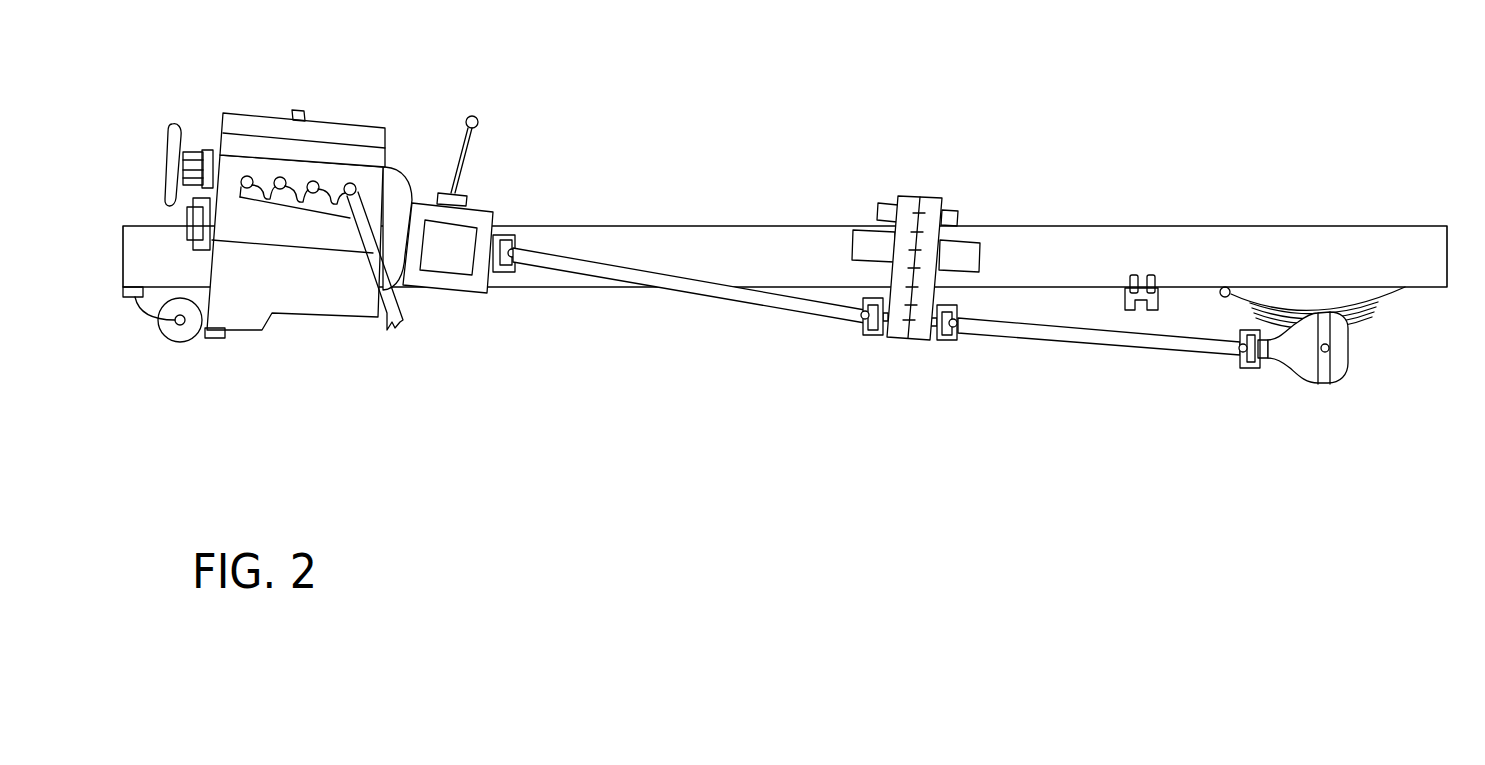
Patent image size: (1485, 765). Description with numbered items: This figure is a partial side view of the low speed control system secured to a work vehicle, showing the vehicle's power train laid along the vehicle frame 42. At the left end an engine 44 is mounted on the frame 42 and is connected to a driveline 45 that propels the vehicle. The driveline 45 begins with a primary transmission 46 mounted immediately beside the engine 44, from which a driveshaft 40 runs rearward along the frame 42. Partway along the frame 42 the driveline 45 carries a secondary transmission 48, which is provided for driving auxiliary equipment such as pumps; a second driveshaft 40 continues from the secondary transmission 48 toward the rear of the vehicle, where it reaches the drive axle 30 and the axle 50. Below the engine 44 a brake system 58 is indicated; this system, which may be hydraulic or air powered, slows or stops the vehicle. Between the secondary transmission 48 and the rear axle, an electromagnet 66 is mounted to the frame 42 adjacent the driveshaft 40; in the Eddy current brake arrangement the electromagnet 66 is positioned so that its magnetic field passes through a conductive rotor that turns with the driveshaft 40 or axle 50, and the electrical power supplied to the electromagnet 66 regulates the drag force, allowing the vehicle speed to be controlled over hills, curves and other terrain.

The drive axle 30 is at (1327, 352).
The driveshaft 40 is at (715, 298).
The frame 42 is at (1063, 243).
The engine 44 is at (305, 120).
The driveline 45 is at (685, 78).
The primary transmission 46 is at (480, 215).
The secondary transmission 48 is at (910, 203).
The axle 50 is at (1340, 345).
The brake system 58 is at (177, 333).
The electromagnet 66 is at (1140, 307).